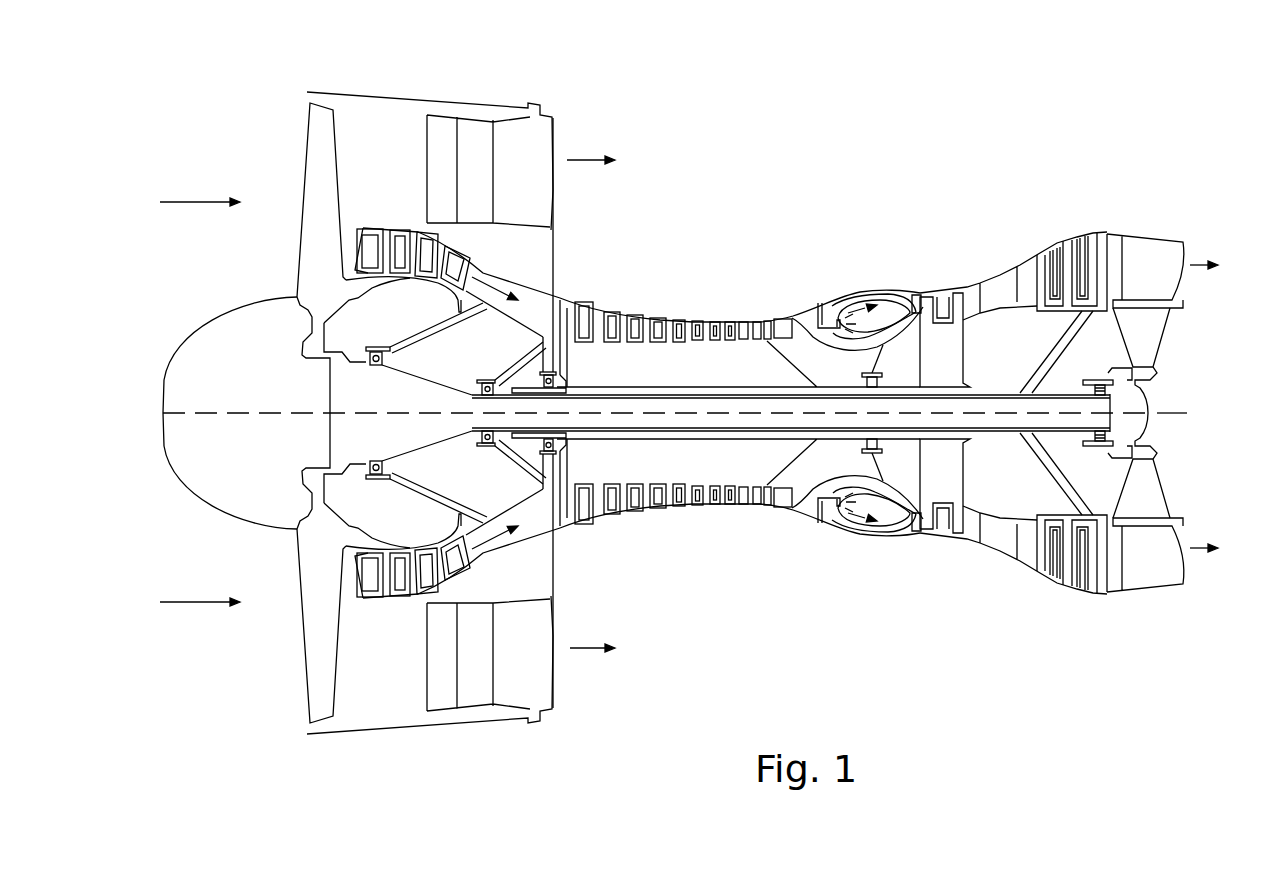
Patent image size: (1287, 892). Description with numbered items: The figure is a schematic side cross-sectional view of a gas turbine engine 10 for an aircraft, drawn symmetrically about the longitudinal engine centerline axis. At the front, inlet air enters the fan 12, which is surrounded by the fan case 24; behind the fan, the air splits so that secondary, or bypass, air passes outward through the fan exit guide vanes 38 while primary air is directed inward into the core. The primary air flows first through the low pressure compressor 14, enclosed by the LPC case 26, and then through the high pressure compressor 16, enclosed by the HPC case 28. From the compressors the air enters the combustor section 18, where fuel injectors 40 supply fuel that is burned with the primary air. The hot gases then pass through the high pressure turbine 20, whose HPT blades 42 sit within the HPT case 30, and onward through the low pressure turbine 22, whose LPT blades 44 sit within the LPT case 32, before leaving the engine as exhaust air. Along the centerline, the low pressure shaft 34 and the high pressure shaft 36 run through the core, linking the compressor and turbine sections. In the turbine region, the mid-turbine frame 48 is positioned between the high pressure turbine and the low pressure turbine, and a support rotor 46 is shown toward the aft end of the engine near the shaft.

The gas turbine engine 10 is at (700, 400).
The fan 12 is at (303, 652).
The low pressure compressor 14 is at (420, 593).
The high pressure compressor 16 is at (712, 523).
The combustor section 18 is at (868, 292).
The high pressure turbine 20 is at (990, 428).
The low pressure turbine 22 is at (1084, 446).
The fan case 24 is at (403, 110).
The LPC case 26 is at (403, 240).
The HPC case 28 is at (687, 318).
The HPT case 30 is at (970, 287).
The LPT case 32 is at (1108, 230).
The low pressure shaft 34 is at (753, 403).
The high pressure shaft 36 is at (807, 504).
The fan exit guide vanes 38 is at (487, 193).
The fuel injectors 40 is at (825, 316).
The HPT blades 42 is at (957, 528).
The LPT blades 44 is at (1040, 268).
The support rotor 46 is at (1047, 353).
The mid-turbine frame 48 is at (972, 283).